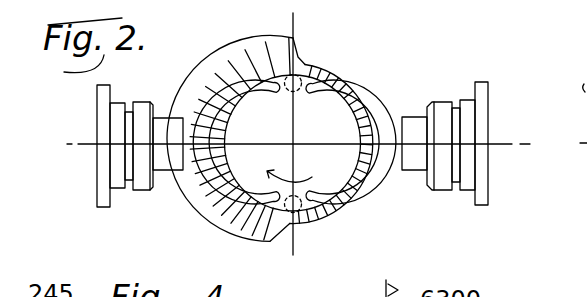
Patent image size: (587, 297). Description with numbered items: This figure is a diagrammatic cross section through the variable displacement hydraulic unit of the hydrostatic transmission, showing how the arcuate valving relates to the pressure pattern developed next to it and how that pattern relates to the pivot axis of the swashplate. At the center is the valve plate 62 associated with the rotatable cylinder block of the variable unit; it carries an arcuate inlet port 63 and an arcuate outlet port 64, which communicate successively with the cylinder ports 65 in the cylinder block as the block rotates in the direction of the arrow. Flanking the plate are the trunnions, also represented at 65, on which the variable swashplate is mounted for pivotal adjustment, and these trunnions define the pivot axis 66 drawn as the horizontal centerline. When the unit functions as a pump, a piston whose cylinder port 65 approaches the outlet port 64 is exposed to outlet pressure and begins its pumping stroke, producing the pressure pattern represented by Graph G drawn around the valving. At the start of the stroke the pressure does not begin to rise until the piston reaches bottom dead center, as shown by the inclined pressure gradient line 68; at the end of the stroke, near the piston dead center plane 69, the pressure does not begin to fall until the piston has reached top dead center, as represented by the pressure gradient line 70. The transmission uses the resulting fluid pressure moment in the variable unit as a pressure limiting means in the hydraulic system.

The valve plate 62 is at (323, 173).
The arcuate inlet port 63 is at (344, 103).
The arcuate outlet port 64 is at (247, 91).
The cylinder ports 65 is at (103, 105).
The pivot axis 66 is at (498, 140).
The inclined pressure gradient line 68 is at (280, 243).
The piston dead center plane 69 is at (293, 37).
The pressure gradient line 70 is at (302, 47).
The Graph G is at (225, 138).